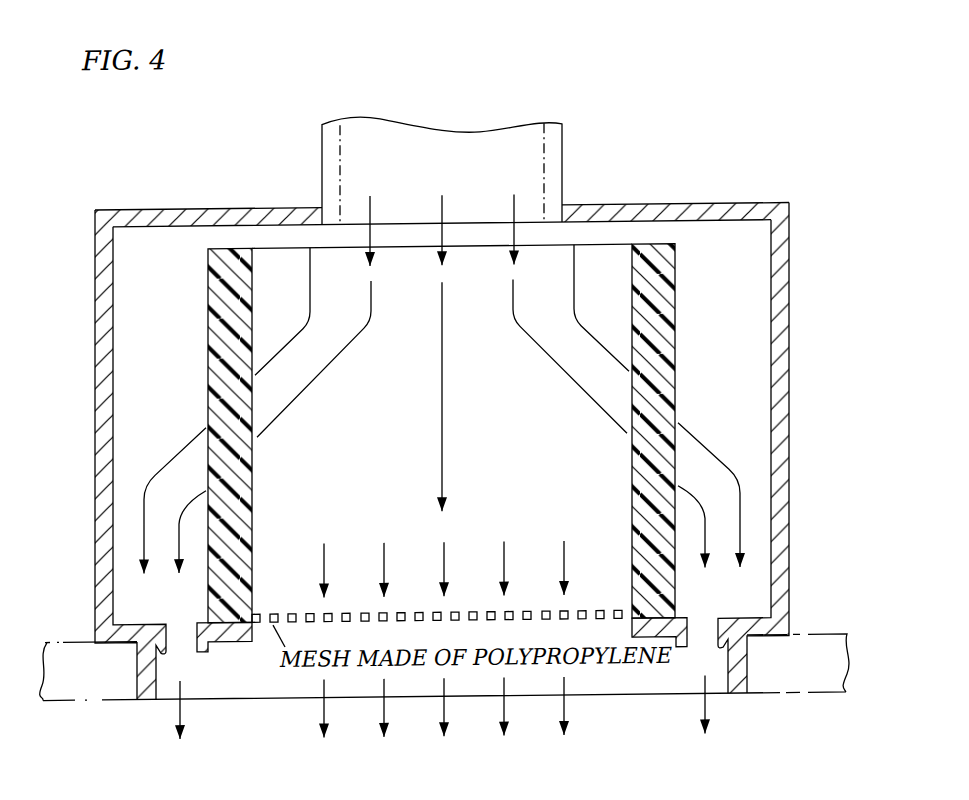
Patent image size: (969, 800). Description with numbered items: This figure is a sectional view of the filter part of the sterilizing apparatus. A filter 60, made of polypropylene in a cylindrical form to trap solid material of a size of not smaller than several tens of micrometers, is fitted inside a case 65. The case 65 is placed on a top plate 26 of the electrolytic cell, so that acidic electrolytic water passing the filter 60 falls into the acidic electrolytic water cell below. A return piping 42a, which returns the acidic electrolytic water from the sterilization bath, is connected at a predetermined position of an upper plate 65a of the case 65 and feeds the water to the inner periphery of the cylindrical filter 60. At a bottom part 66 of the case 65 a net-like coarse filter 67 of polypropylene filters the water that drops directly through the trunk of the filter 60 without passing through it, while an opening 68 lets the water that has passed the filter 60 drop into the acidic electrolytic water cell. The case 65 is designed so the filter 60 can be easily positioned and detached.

The top plate 26 is at (815, 641).
The return piping 42a is at (563, 177).
The filter 60 is at (675, 270).
The case 65 is at (789, 345).
The upper plate 65a is at (165, 211).
The bottom part 66 is at (563, 607).
The net-like coarse filter 67 is at (307, 620).
The opening 68 is at (186, 633).